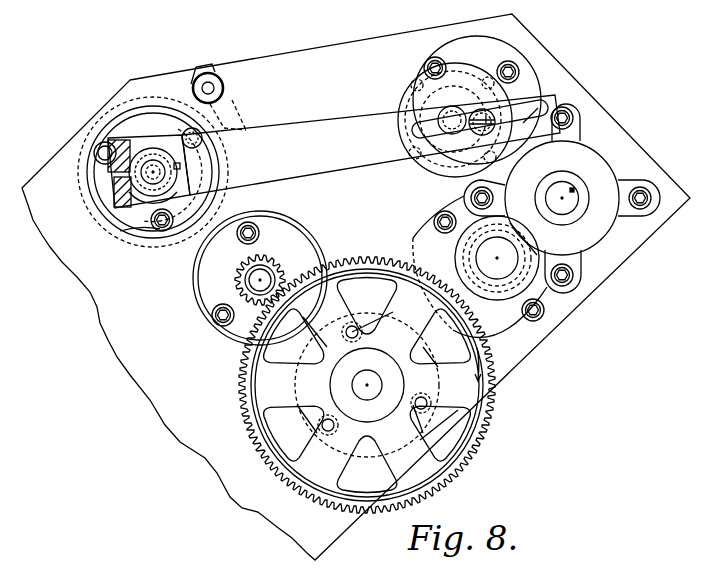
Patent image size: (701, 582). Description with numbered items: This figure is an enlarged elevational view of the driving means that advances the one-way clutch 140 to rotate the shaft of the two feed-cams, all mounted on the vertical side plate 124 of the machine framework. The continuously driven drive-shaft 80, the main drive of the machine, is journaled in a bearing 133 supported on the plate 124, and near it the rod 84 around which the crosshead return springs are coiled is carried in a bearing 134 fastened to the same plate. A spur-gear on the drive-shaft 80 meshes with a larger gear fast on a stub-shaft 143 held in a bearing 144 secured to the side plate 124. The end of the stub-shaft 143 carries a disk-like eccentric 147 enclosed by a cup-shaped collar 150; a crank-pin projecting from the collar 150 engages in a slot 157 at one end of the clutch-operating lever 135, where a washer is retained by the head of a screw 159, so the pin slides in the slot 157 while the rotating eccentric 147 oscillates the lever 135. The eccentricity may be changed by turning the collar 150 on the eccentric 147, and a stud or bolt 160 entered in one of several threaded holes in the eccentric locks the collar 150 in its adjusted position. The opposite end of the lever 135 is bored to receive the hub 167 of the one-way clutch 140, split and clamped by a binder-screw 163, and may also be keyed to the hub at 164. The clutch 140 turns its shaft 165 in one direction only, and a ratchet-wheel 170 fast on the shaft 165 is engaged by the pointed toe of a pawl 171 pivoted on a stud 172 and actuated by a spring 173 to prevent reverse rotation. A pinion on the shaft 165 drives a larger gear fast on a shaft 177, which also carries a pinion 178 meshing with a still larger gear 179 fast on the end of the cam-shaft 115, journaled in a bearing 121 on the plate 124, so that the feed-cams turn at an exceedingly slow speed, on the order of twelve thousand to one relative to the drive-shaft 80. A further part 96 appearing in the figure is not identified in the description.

The drive-shaft 80 is at (560, 207).
The rod 84 is at (500, 270).
The keyway 96 is at (572, 190).
The cam-shaft 115 is at (360, 390).
The bearing 121 is at (373, 452).
The vertical side plate 124 is at (123, 355).
The bearing 133 is at (595, 228).
The bearing 134 is at (456, 250).
The clutch-operating lever 135 is at (357, 102).
The one-way clutch 140 is at (145, 219).
The stub-shaft 143 is at (477, 100).
The bearing 144 is at (517, 85).
The eccentric 147 is at (405, 134).
The cup-shaped collar 150 is at (447, 163).
The slot 157 is at (537, 98).
The screw 159 is at (477, 100).
The stud or bolt 160 is at (413, 77).
The binder-screw 163 is at (126, 138).
The key 164 is at (180, 166).
The shaft 165 is at (158, 160).
The hub 167 is at (147, 191).
The ratchet-wheel 170 is at (84, 201).
The pawl 171 is at (238, 112).
The stud 172 is at (226, 86).
The spring 173 is at (230, 72).
The shaft 177 is at (252, 275).
The pinion 178 is at (242, 283).
The gear 179 is at (255, 395).